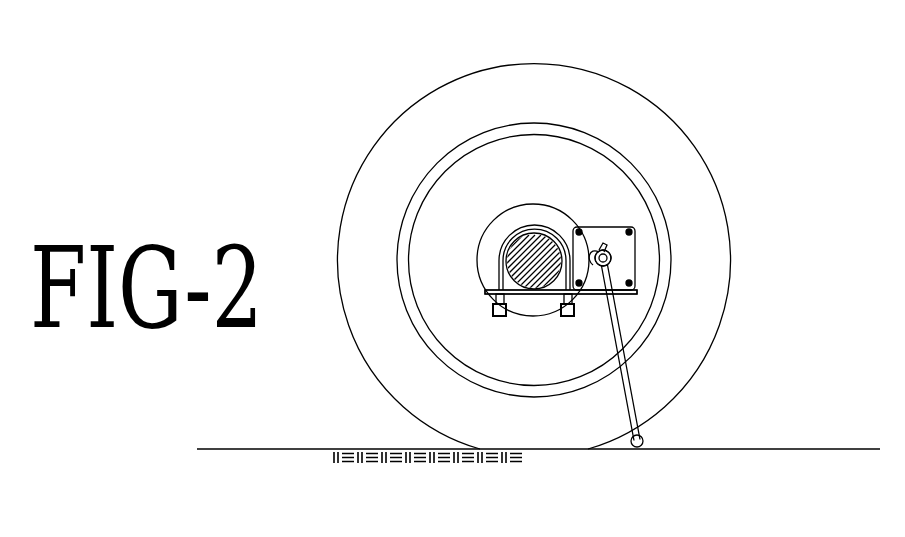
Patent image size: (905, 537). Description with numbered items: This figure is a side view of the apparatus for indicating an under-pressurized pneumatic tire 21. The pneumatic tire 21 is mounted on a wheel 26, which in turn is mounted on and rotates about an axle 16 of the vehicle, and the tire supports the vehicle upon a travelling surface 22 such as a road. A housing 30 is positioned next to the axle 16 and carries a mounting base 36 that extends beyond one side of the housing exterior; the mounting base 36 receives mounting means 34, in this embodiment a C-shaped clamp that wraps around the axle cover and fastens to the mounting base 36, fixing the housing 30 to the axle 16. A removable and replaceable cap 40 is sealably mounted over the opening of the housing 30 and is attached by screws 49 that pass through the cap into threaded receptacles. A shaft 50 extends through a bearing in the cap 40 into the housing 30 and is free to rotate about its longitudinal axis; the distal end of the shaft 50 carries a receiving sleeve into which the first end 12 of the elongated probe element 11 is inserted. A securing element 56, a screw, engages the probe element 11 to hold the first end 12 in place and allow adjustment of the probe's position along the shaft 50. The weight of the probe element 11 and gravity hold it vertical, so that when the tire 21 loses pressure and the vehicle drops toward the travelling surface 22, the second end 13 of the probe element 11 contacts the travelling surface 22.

The probe element 11 is at (618, 328).
The first end 12 is at (606, 250).
The second end 13 is at (643, 440).
The axle 16 is at (522, 254).
The pneumatic tire 21 is at (409, 392).
The travelling surface 22 is at (547, 515).
The wheel 26 is at (449, 290).
The housing 30 is at (647, 238).
The mounting means 34 is at (531, 225).
The mounting base 36 is at (515, 294).
The cap 40 is at (636, 265).
The screws 49 is at (580, 230).
The shaft 50 is at (588, 294).
The securing element 56 is at (612, 258).